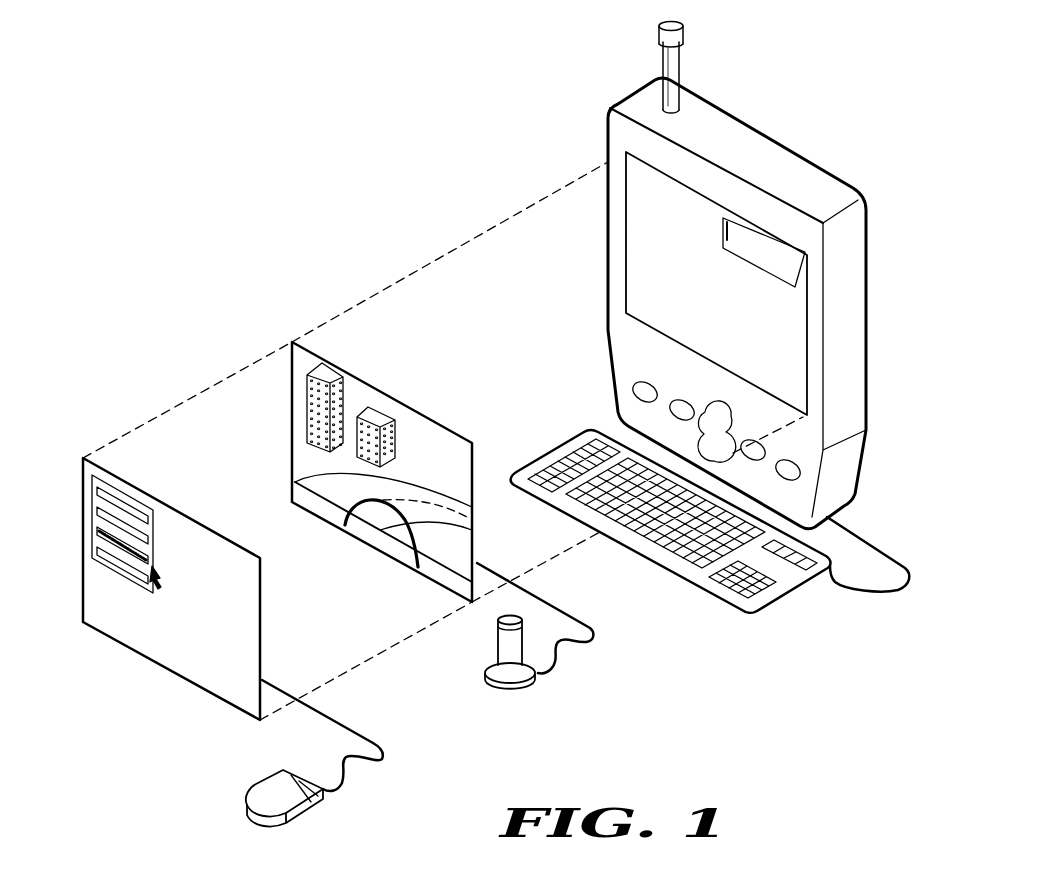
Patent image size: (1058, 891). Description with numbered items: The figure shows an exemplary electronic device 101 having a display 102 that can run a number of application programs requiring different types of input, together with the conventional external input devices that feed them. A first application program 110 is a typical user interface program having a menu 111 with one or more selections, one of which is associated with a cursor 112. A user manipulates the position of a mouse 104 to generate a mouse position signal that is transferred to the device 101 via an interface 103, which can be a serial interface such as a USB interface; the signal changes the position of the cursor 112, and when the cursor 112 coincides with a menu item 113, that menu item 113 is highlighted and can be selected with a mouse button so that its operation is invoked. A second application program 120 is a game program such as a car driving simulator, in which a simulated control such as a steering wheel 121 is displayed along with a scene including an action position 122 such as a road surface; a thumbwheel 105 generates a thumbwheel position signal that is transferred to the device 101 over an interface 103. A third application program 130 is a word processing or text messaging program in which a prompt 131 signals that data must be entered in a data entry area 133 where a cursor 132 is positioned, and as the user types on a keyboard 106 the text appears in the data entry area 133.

The device 101 is at (608, 325).
The display 102 is at (626, 265).
The interface 103 is at (375, 742).
The mouse 104 is at (292, 765).
The thumbwheel 105 is at (525, 687).
The keyboard 106 is at (757, 610).
The application program 110 is at (225, 657).
The menu 111 is at (92, 490).
The cursor 112 is at (162, 580).
The menu item 113 is at (153, 560).
The application program 120 is at (450, 466).
The steering wheel 121 is at (418, 562).
The action position 122 is at (465, 522).
The application program 130 is at (717, 272).
The prompt 131 is at (660, 205).
The cursor 132 is at (727, 236).
The data entry area 133 is at (750, 265).